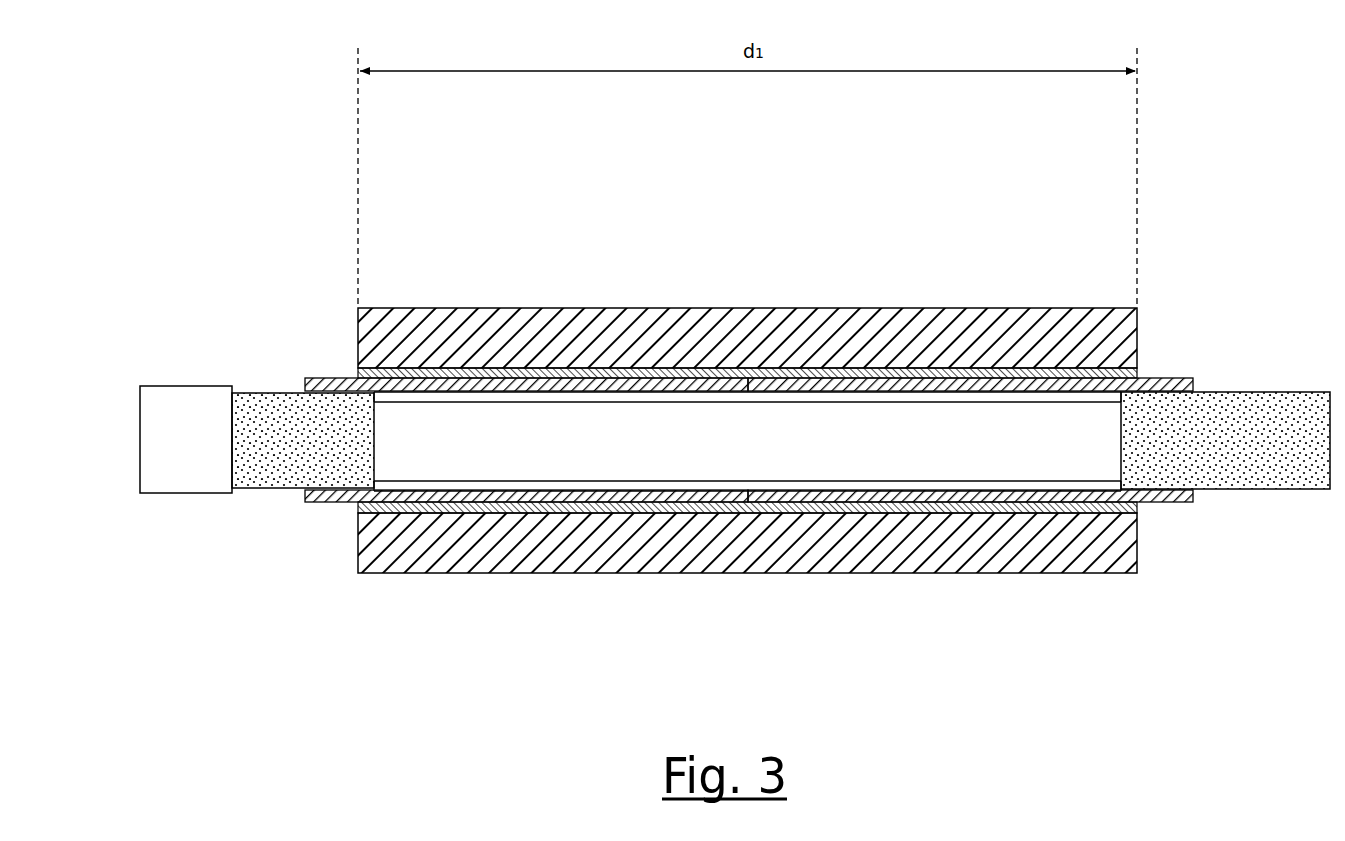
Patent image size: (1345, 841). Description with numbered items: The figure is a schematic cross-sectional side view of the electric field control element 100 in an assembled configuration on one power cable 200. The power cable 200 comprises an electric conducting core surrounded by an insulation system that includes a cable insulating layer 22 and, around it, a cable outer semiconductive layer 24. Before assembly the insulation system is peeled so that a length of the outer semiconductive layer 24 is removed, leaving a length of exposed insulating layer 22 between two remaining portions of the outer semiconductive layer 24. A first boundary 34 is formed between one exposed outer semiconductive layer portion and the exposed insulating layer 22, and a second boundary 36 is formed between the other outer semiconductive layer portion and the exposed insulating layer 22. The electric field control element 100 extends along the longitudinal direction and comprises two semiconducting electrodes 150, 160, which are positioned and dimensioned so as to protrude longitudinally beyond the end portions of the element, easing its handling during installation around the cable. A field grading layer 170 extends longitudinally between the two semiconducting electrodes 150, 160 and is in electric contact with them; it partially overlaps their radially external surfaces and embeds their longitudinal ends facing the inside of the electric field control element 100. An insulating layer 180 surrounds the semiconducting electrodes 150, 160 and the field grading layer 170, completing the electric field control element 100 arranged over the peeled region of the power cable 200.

The electric field control element 100 is at (735, 422).
The cable insulating layer 22 is at (570, 450).
The cable outer semiconductive layer 24 is at (1260, 385).
The first boundary 34 is at (375, 438).
The second boundary 36 is at (1121, 443).
The semiconducting electrode 150 is at (332, 380).
The semiconducting electrode 160 is at (1177, 380).
The field grading layer 170 is at (774, 370).
The insulating layer 180 is at (960, 308).
The power cable 200 is at (245, 497).